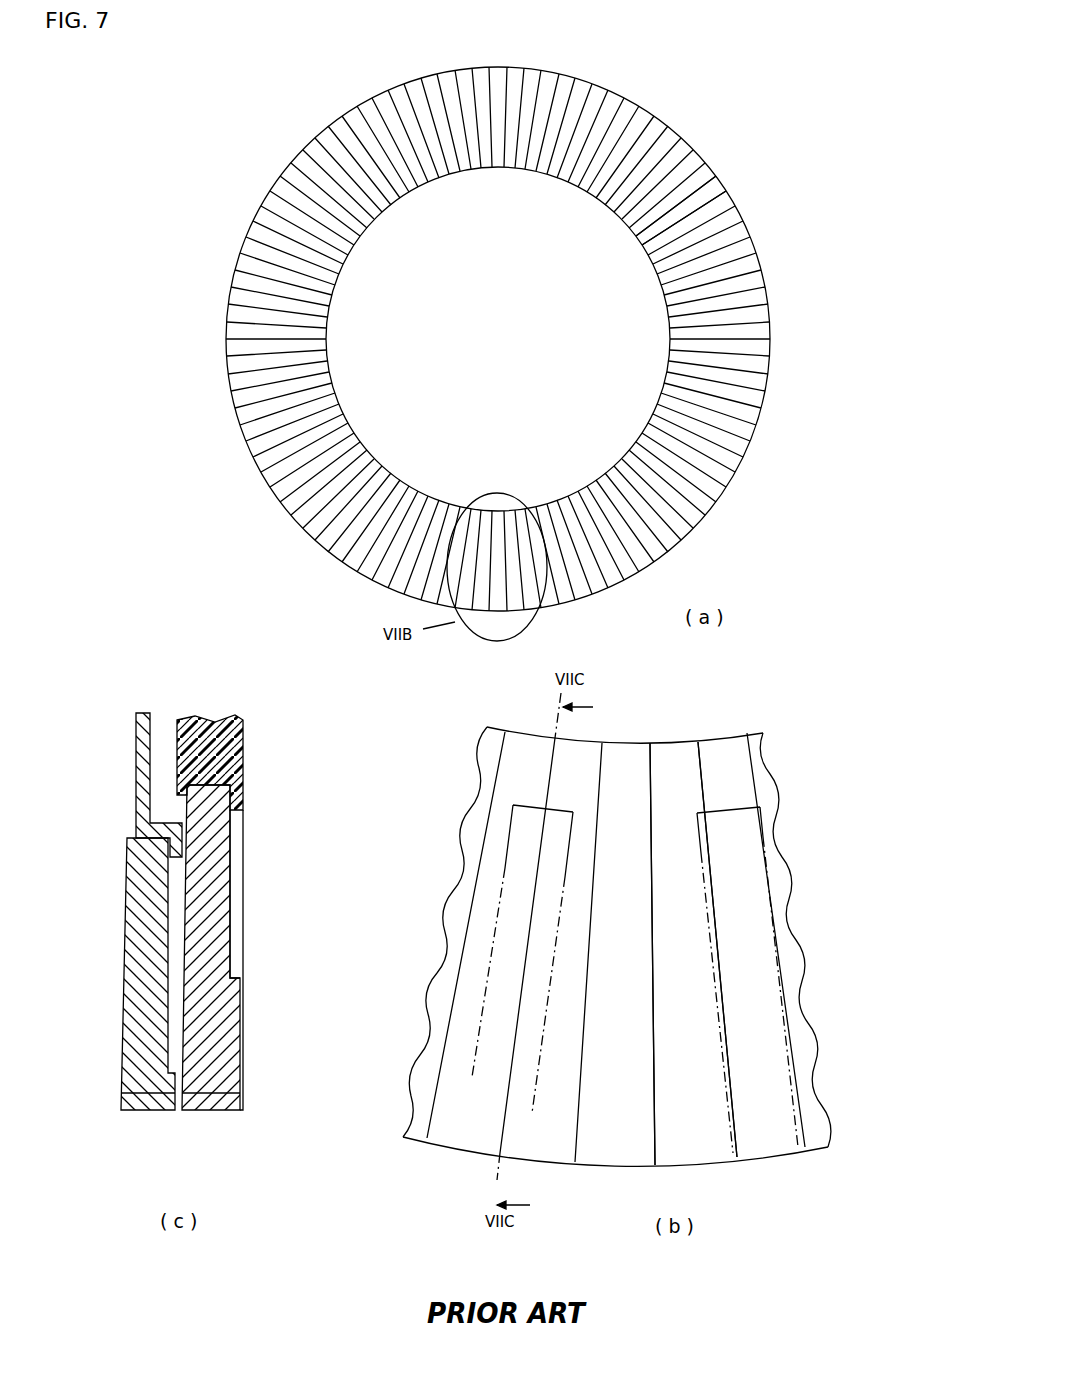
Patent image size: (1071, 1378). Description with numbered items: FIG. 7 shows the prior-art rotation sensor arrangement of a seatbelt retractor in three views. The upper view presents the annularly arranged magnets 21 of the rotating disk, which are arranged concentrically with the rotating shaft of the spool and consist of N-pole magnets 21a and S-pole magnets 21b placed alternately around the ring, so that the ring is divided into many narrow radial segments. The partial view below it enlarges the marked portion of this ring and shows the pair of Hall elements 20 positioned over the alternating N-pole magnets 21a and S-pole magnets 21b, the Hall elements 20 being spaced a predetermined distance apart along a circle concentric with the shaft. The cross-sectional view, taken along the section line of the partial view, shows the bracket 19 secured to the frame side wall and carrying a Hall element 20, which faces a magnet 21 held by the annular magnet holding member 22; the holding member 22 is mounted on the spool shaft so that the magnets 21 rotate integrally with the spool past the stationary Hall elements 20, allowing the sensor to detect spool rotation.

The bracket 19 is at (142, 810).
The Hall elements 20 is at (132, 960).
The annularly arranged magnets 21 is at (759, 95).
The N-pole magnets 21a is at (703, 157).
The S-pole magnets 21b is at (722, 172).
The annular magnet holding member 22 is at (247, 740).